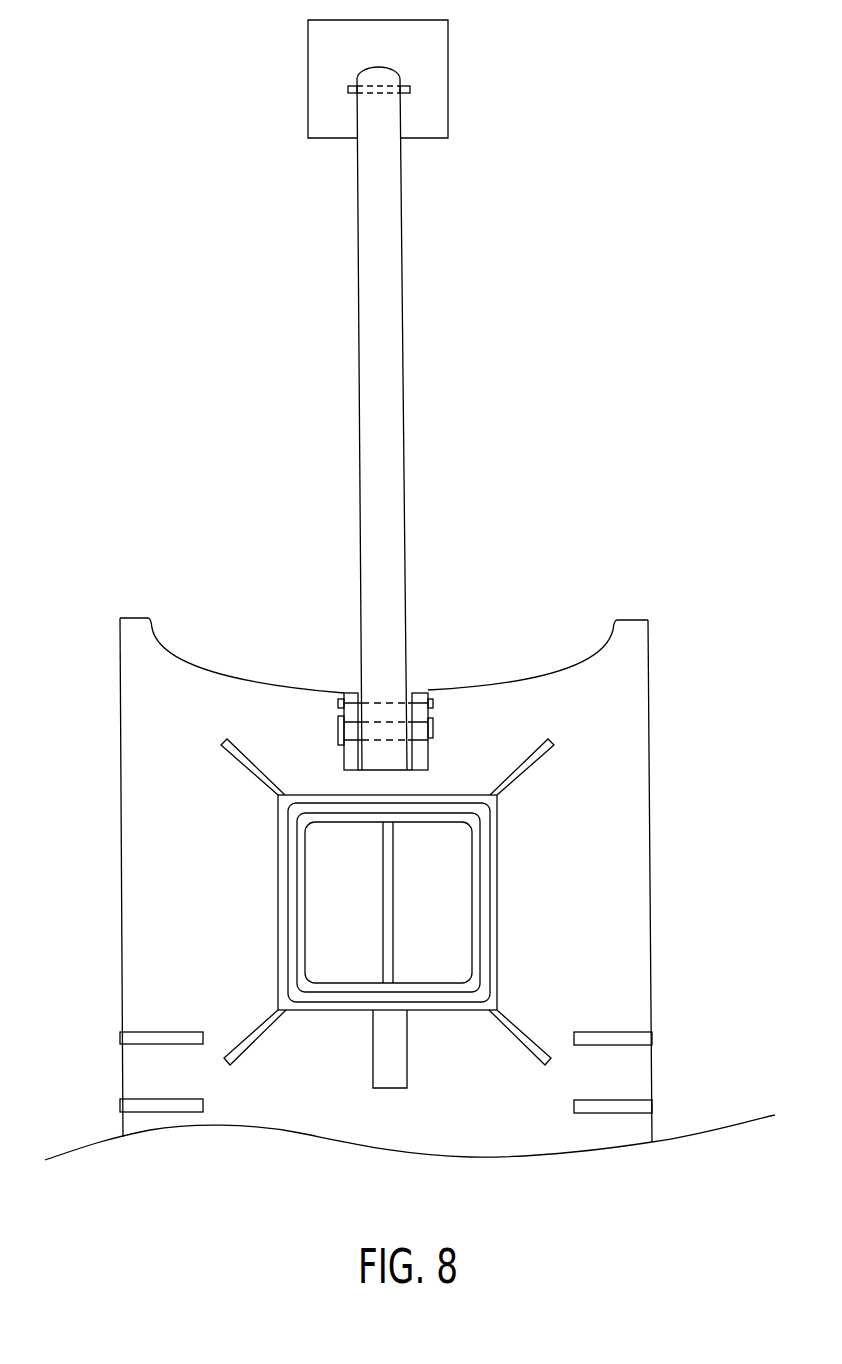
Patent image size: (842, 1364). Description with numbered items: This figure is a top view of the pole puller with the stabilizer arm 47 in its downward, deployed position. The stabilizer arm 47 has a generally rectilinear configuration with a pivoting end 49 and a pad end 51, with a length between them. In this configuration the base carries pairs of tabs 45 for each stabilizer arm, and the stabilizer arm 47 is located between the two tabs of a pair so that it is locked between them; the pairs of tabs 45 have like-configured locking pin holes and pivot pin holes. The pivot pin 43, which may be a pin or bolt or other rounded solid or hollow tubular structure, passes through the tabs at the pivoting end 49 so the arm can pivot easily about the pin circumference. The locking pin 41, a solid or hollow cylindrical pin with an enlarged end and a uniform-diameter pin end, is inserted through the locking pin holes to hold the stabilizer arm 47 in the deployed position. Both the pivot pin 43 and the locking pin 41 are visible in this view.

The locking pin 41 is at (388, 700).
The pivot pin 43 is at (343, 731).
The pairs of tabs 45 is at (610, 1038).
The stabilizer arm 47 is at (250, 395).
The pivoting end 49 is at (377, 760).
The pad end 51 is at (373, 193).